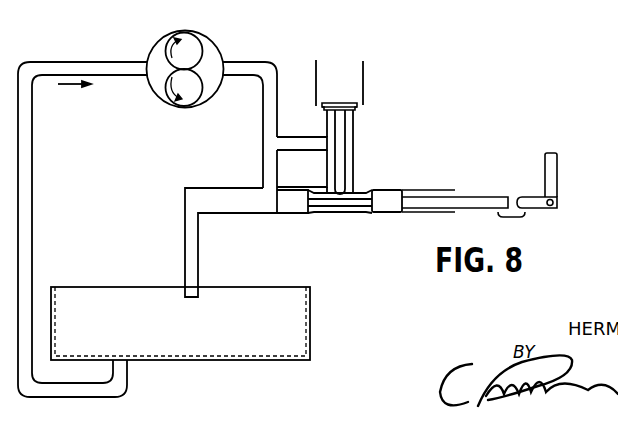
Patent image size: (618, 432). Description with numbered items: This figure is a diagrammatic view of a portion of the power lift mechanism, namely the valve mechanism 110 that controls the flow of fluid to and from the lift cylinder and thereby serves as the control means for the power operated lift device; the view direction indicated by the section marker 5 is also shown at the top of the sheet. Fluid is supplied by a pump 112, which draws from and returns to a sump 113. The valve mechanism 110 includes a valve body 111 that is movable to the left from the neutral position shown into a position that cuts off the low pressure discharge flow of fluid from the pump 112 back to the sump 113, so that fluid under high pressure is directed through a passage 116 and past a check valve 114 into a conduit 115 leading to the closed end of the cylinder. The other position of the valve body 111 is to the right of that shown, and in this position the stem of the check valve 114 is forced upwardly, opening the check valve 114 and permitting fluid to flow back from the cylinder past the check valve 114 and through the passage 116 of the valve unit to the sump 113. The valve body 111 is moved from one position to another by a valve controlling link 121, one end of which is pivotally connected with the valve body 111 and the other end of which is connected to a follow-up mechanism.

The section view direction indicator 5 is at (390, 0).
The valve mechanism 110 is at (470, 191).
The valve body 111 is at (382, 194).
The pump 112 is at (186, 31).
The sump 113 is at (122, 294).
The check valve 114 is at (343, 104).
The conduit 115 is at (353, 78).
The passage 116 is at (292, 134).
The valve controlling link 121 is at (552, 178).